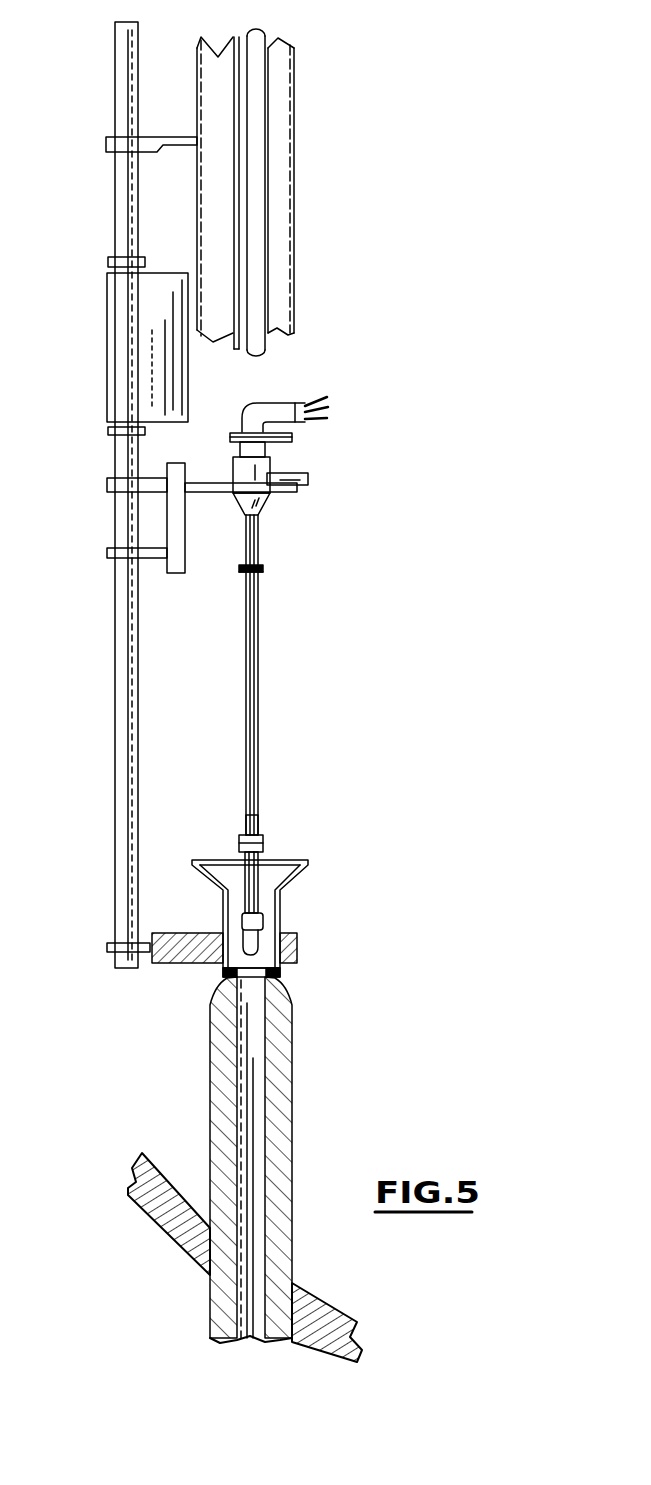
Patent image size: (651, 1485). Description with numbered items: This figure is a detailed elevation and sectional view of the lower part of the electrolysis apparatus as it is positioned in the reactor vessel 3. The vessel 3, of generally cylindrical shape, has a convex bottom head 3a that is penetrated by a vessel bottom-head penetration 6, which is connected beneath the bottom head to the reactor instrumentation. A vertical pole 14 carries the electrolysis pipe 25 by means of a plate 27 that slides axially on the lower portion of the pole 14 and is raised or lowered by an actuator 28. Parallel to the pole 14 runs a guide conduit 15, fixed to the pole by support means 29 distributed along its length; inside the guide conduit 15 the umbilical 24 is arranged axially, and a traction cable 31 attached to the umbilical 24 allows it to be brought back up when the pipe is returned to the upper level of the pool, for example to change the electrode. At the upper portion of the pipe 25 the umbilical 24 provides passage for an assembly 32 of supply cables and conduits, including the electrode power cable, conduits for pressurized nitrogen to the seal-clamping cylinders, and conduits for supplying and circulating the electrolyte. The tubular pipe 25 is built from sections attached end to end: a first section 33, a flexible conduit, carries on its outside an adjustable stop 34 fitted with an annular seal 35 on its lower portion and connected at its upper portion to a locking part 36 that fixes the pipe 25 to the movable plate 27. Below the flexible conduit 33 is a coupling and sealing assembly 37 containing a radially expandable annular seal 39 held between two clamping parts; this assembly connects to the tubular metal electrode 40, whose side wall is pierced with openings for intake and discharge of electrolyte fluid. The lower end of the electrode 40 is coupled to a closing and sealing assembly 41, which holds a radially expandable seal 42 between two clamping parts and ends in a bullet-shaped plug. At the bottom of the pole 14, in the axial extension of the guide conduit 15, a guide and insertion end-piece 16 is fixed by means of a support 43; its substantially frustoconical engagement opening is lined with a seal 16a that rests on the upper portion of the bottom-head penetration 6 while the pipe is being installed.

The vessel 3 is at (154, 1253).
The convex bottom head 3a is at (323, 1317).
The vessel bottom-head penetration 6 is at (277, 1133).
The pole 14 is at (127, 748).
The guide conduit 15 is at (294, 198).
The guide and insertion end-piece 16 is at (296, 910).
The seal 16a is at (223, 978).
The umbilical 24 is at (283, 122).
The electrolysis pipe 25 is at (276, 725).
The plate 27 is at (175, 565).
The actuator 28 is at (127, 312).
The support means 29 is at (178, 147).
The traction cable 31 is at (243, 95).
The assembly of supply cables and conduits 32 is at (324, 384).
The first section 33 is at (250, 705).
The adjustable stop 34 is at (260, 568).
The annular seal 35 is at (235, 578).
The locking part 36 is at (308, 472).
The coupling and sealing assembly 37 is at (245, 830).
The radially expandable annular seal 39 is at (243, 832).
The electrode 40 is at (253, 868).
The closing and sealing assembly 41 is at (245, 922).
The radially expandable seal 42 is at (260, 935).
The support 43 is at (162, 940).